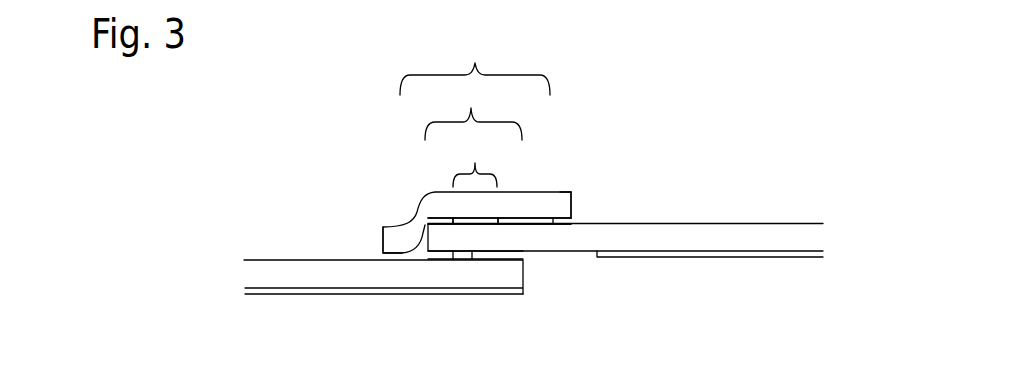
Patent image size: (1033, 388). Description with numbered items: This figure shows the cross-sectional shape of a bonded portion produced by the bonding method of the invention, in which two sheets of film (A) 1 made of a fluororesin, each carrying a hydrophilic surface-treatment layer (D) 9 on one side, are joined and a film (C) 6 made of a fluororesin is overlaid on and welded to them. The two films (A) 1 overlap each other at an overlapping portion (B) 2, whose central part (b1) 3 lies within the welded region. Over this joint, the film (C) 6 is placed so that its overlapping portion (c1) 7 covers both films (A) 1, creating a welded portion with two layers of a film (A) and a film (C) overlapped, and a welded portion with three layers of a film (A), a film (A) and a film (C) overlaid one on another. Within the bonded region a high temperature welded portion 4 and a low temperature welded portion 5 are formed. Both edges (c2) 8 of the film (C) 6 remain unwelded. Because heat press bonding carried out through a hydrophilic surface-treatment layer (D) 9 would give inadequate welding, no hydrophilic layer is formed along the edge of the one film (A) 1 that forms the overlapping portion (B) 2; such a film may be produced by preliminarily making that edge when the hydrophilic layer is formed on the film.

The film (A) made of a fluororesin 1 is at (628, 233).
The overlapping portion (B) 2 is at (498, 154).
The central part (b1) 3 is at (475, 182).
The high temperature welded portion 4 is at (478, 221).
The low temperature welded portion 5 is at (420, 255).
The film (C) made of a fluororesin 6 is at (441, 203).
The overlapping portion (c1) 7 is at (475, 61).
The edge (c2) 8 is at (393, 242).
The hydrophilic surface-treatment layer (D) 9 is at (625, 253).